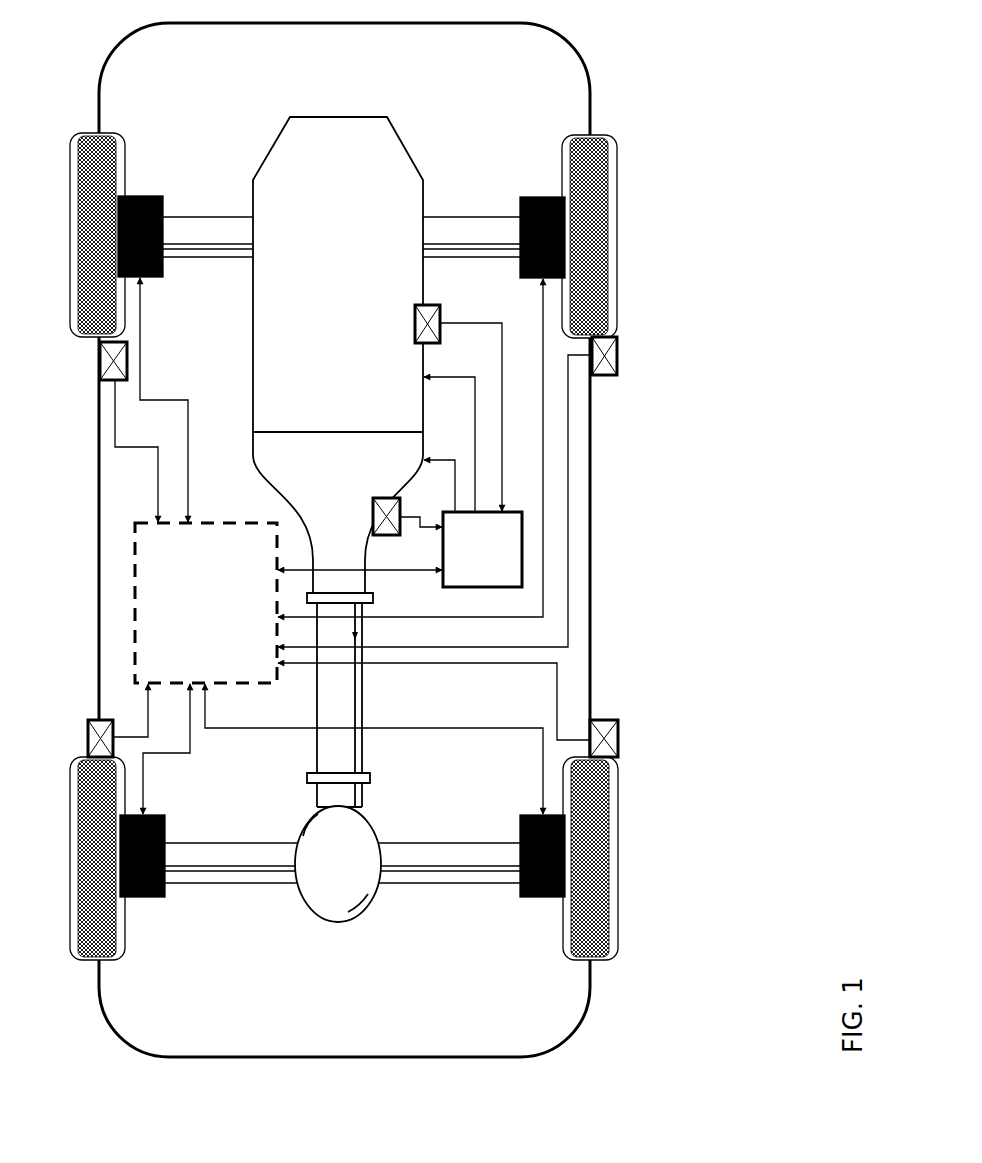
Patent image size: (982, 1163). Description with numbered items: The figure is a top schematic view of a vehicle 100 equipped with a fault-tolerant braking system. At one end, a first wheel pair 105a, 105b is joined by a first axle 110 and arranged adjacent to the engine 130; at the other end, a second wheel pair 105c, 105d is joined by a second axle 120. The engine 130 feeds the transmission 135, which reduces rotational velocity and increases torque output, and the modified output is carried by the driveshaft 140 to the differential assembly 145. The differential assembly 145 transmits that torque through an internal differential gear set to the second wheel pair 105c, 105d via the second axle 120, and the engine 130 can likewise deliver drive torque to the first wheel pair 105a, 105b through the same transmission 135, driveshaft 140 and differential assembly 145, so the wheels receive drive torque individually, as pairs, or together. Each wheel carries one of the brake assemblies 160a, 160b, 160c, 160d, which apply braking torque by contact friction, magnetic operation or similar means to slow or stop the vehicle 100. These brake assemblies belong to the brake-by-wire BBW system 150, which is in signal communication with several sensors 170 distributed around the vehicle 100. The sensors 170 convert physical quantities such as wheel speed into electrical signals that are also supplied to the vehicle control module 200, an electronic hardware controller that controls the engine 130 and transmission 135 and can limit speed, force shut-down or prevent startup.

The vehicle 100 is at (102, 72).
The first wheel 105a is at (80, 225).
The first wheel 105b is at (617, 230).
The second wheel 105c is at (75, 850).
The second wheel 105d is at (617, 845).
The first axle 110 is at (230, 215).
The second axle 120 is at (270, 843).
The engine 130 is at (372, 303).
The transmission 135 is at (372, 462).
The driveshaft 140 is at (362, 757).
The differential assembly 145 is at (373, 910).
The BBW system 150 is at (227, 618).
The brake assembly 160a is at (160, 280).
The brake assembly 160b is at (518, 280).
The brake assembly 160c is at (142, 898).
The brake assembly 160d is at (545, 898).
The sensor 170 is at (432, 305).
The vehicle control module 200 is at (507, 561).